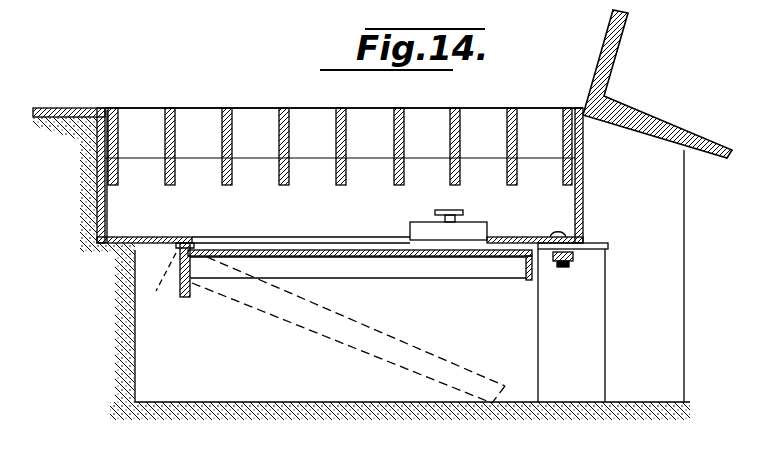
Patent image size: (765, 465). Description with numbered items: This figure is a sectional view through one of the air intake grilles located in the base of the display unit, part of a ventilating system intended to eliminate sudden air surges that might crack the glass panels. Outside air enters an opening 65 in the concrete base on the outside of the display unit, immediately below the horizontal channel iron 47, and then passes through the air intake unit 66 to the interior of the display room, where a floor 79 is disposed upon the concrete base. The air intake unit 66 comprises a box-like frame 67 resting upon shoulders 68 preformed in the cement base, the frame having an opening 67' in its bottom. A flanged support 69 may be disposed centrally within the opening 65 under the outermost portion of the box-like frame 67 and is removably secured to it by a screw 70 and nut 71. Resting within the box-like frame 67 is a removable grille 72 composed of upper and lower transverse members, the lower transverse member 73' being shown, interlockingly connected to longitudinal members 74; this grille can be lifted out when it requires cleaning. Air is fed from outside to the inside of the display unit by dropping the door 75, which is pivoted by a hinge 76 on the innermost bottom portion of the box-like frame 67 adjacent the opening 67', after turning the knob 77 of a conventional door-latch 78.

The horizontal channel iron 47 is at (612, 86).
The opening 65 is at (689, 215).
The air intake unit 66 is at (210, 104).
The box-like frame 67 is at (604, 175).
The opening in the bottom of the box-like frame 67' is at (340, 242).
The shoulder 68 is at (108, 252).
The flanged support 69 is at (606, 332).
The screw 70 is at (552, 233).
The nut 71 is at (575, 260).
The removable grille 72 is at (364, 108).
The lower transverse member 73' is at (340, 147).
The longitudinal member 74 is at (165, 136).
The door 75 is at (427, 347).
The hinge 76 is at (176, 237).
The knob 77 is at (462, 216).
The door-latch 78 is at (410, 228).
The floor 79 is at (58, 108).